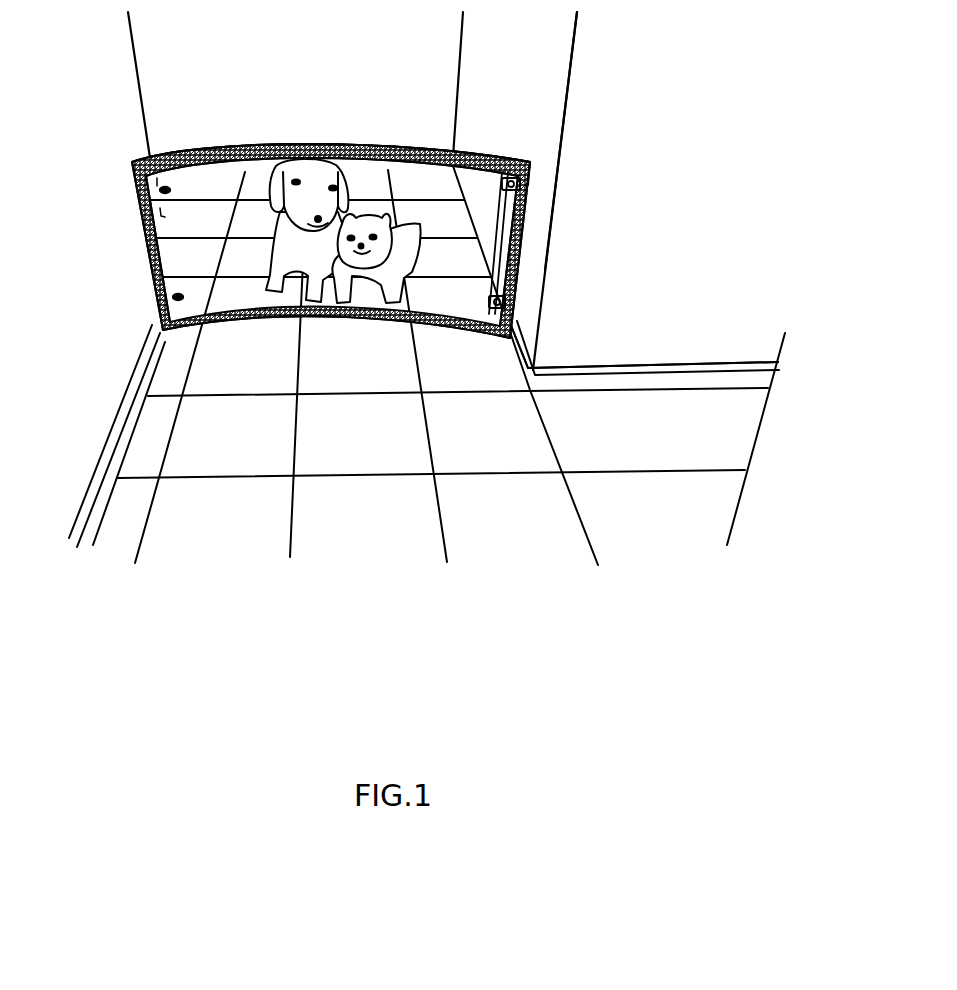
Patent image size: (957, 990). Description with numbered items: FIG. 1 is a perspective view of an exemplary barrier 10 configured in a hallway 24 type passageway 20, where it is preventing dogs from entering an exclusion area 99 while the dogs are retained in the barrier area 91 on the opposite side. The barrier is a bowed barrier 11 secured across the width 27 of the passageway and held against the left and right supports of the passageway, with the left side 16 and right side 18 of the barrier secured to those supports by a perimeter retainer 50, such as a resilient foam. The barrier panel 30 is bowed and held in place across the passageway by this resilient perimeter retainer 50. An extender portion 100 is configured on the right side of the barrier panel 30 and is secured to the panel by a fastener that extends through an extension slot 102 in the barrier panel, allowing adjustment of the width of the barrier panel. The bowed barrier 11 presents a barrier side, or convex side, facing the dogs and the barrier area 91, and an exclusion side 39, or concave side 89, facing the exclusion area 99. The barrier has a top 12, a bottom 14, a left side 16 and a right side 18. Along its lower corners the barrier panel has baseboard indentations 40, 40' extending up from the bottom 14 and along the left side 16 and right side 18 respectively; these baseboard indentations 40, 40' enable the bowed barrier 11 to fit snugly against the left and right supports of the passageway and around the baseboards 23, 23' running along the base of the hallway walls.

The barrier 10 is at (334, 220).
The bowed barrier 11 is at (455, 140).
The top 12 is at (303, 143).
The bottom 14 is at (342, 320).
The left side 16 is at (145, 258).
The right side 18 is at (525, 250).
The passageway 20 is at (527, 88).
The baseboard 23 is at (102, 436).
The baseboard 23' is at (644, 341).
The hallway 24 is at (532, 142).
The width 27 is at (560, 60).
The barrier panel 30 is at (535, 226).
The exclusion side 39 is at (138, 178).
The baseboard indentation 40 is at (123, 250).
The baseboard indentation 40' is at (550, 297).
The perimeter retainer 50 is at (383, 147).
The concave side 89 is at (140, 212).
The barrier area 91 is at (197, 224).
The exclusion area 99 is at (352, 436).
The extender portion 100 is at (510, 208).
The extension slot 102 is at (532, 170).